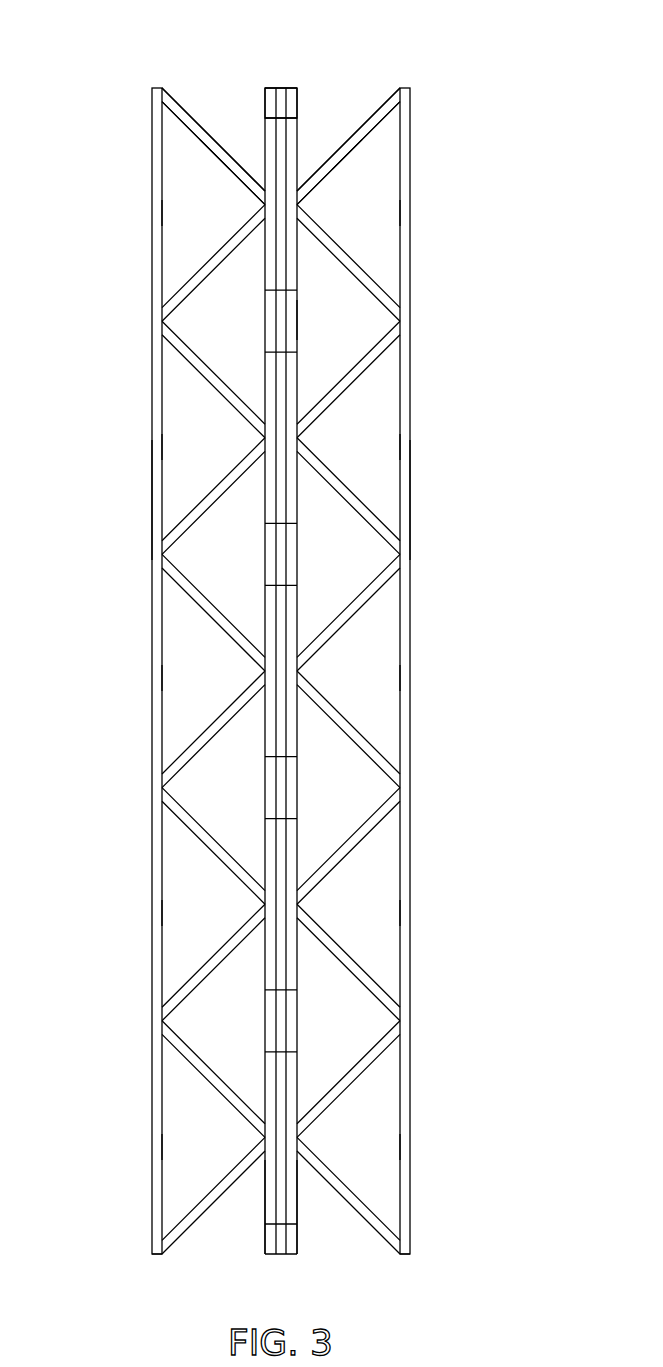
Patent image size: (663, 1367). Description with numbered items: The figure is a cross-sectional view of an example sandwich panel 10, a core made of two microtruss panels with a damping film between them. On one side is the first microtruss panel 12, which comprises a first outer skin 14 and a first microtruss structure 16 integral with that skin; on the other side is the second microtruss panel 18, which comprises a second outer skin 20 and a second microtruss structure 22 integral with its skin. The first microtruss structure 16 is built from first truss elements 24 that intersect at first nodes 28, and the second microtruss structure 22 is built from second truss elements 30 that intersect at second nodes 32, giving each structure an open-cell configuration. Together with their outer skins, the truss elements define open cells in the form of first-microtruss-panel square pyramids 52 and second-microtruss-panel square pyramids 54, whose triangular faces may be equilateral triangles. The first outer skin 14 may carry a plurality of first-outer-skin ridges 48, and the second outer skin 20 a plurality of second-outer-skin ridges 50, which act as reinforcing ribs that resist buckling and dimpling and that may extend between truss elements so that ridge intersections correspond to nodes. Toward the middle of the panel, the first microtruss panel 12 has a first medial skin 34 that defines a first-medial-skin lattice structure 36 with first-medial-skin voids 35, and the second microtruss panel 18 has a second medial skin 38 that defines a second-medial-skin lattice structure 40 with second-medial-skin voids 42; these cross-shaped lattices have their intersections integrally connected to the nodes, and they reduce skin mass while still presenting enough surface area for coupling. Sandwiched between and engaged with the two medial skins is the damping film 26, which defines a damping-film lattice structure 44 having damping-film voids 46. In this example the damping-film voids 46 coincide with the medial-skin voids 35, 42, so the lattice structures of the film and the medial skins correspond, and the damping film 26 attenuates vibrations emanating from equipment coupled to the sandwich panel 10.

The sandwich panel 10 is at (110, 46).
The first microtruss panel 12 is at (148, 316).
The first outer skin 14 is at (150, 473).
The first microtruss structure 16 is at (215, 1250).
The second microtruss panel 18 is at (414, 316).
The second outer skin 20 is at (412, 473).
The second microtruss structure 22 is at (347, 1250).
The first truss elements 24 is at (263, 108).
The damping film 26 is at (280, 1258).
The first nodes 28 is at (264, 205).
The second truss elements 30 is at (299, 108).
The second nodes 32 is at (298, 205).
The first medial skin 34 is at (226, 103).
The first-medial-skin voids 35 is at (268, 312).
The first-medial-skin lattice structure 36 is at (265, 1188).
The second medial skin 38 is at (336, 103).
The second-medial-skin lattice structure 40 is at (297, 1188).
The second-medial-skin voids 42 is at (291, 320).
The damping-film lattice structure 44 is at (280, 87).
The damping-film voids 46 is at (283, 316).
The first-outer-skin ridges 48 is at (162, 203).
The second-outer-skin ridges 50 is at (400, 203).
The first-microtruss-panel square pyramids 52 is at (200, 233).
The second-microtruss-panel square pyramids 54 is at (361, 233).